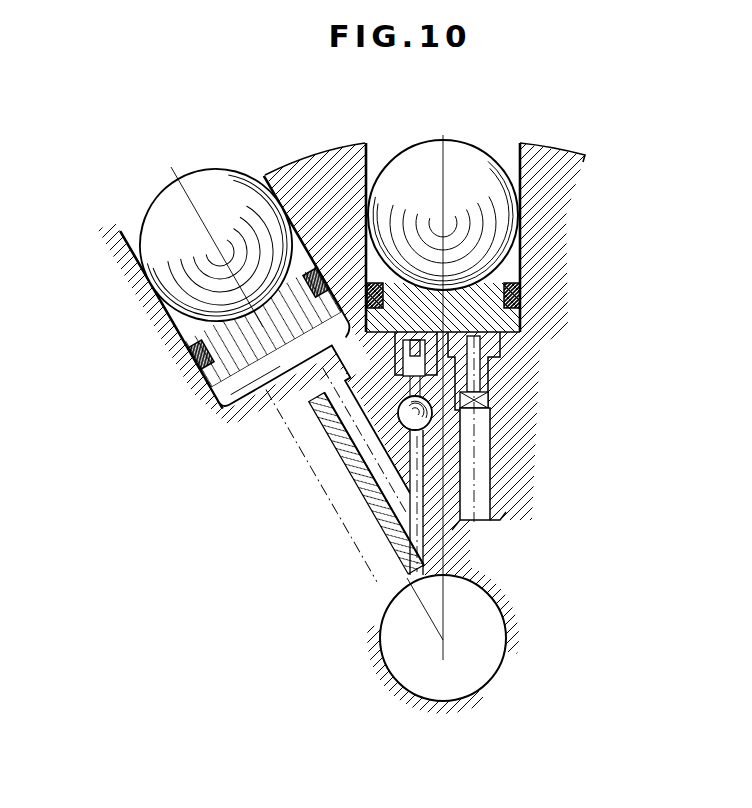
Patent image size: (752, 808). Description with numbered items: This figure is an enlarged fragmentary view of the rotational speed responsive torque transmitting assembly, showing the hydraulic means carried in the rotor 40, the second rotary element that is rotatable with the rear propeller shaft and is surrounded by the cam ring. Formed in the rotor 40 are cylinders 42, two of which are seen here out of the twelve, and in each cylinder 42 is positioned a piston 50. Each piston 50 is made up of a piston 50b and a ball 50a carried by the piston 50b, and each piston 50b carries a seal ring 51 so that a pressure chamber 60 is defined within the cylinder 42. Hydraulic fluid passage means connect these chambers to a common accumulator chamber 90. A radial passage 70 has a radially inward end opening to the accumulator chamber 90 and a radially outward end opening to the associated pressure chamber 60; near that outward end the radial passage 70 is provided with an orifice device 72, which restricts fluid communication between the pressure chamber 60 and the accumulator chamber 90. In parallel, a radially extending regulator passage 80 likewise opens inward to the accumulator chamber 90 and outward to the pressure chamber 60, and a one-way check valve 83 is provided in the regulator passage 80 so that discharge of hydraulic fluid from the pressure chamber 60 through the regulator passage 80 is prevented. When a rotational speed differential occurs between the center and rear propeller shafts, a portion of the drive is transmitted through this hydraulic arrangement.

The rotor 40 is at (583, 154).
The cylinder 42 is at (368, 156).
The piston 50 is at (354, 267).
The ball 50a is at (492, 208).
The piston 50b is at (503, 262).
The seal ring 51 is at (522, 297).
The pressure chamber 60 is at (228, 410).
The radial passage 70 is at (495, 443).
The orifice device 72 is at (497, 349).
The radially extending regulator passage 80 is at (436, 493).
The one-way check valve 83 is at (398, 418).
The accumulator chamber 90 is at (497, 606).